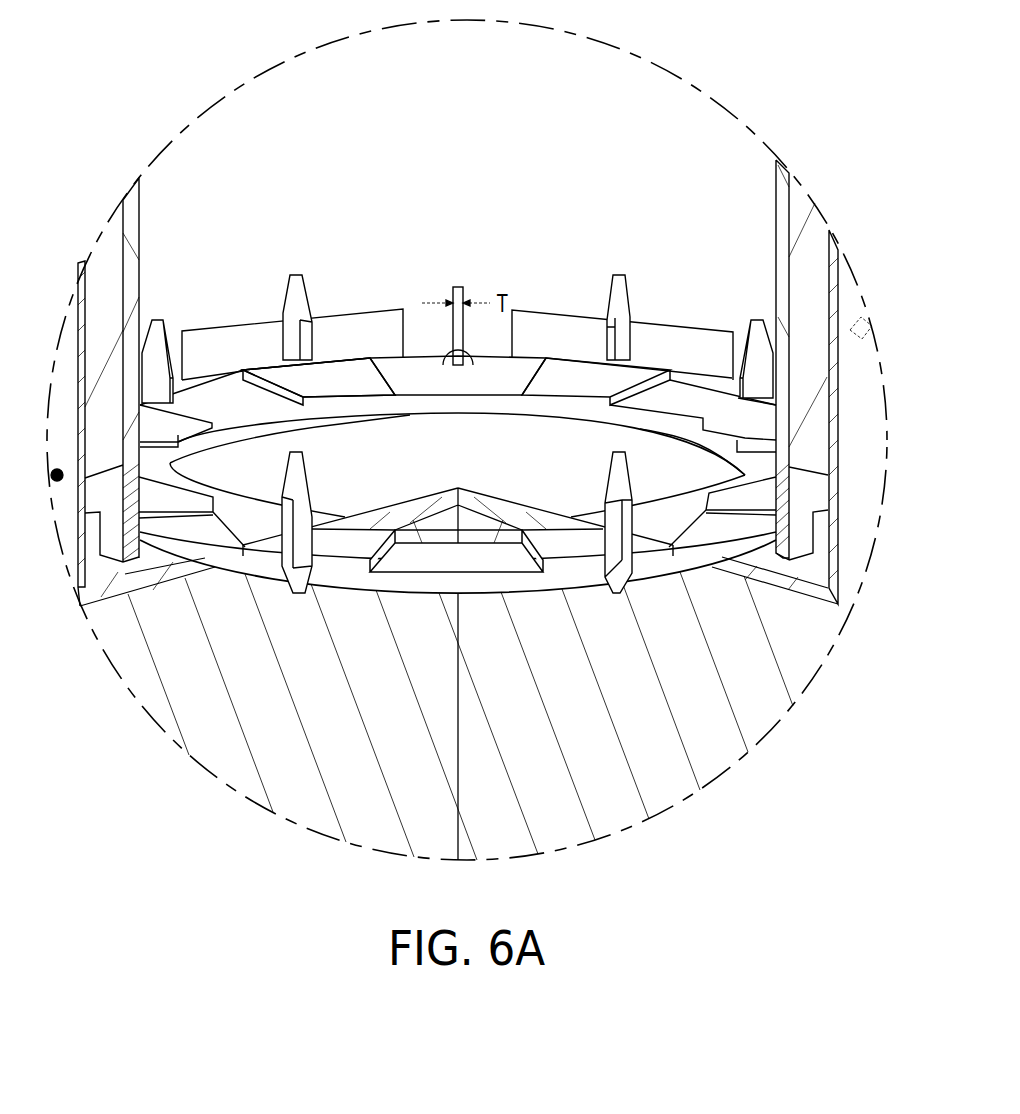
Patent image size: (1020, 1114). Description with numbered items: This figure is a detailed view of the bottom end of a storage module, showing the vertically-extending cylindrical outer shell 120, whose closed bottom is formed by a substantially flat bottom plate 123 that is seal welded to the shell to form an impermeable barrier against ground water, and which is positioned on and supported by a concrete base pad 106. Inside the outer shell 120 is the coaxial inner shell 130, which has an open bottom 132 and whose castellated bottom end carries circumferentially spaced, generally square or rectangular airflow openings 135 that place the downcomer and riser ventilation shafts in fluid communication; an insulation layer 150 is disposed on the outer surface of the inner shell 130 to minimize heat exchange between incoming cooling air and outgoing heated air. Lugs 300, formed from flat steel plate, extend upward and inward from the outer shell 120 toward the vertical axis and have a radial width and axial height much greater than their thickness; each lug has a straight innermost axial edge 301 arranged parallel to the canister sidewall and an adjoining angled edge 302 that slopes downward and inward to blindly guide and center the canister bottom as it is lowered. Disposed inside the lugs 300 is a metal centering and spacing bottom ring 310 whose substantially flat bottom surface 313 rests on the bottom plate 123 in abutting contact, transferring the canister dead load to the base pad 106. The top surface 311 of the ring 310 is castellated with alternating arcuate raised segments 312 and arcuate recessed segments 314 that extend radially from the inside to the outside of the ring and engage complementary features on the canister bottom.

The concrete base pad 106 is at (592, 719).
The outer shell 120 is at (540, 325).
The bottom plate 123 is at (520, 463).
The inner shell 130 is at (470, 114).
The open bottom 132 is at (113, 560).
The airflow openings 135 is at (226, 330).
The insulation layer 150 is at (815, 434).
The lugs 300 is at (307, 280).
The innermost axial edge 301 is at (322, 360).
The angled edge 302 is at (320, 308).
The bottom ring 310 is at (403, 419).
The top surface 311 is at (410, 372).
The arcuate raised segments 312 is at (573, 372).
The bottom surface 313 is at (339, 592).
The arcuate recessed segments 314 is at (678, 398).